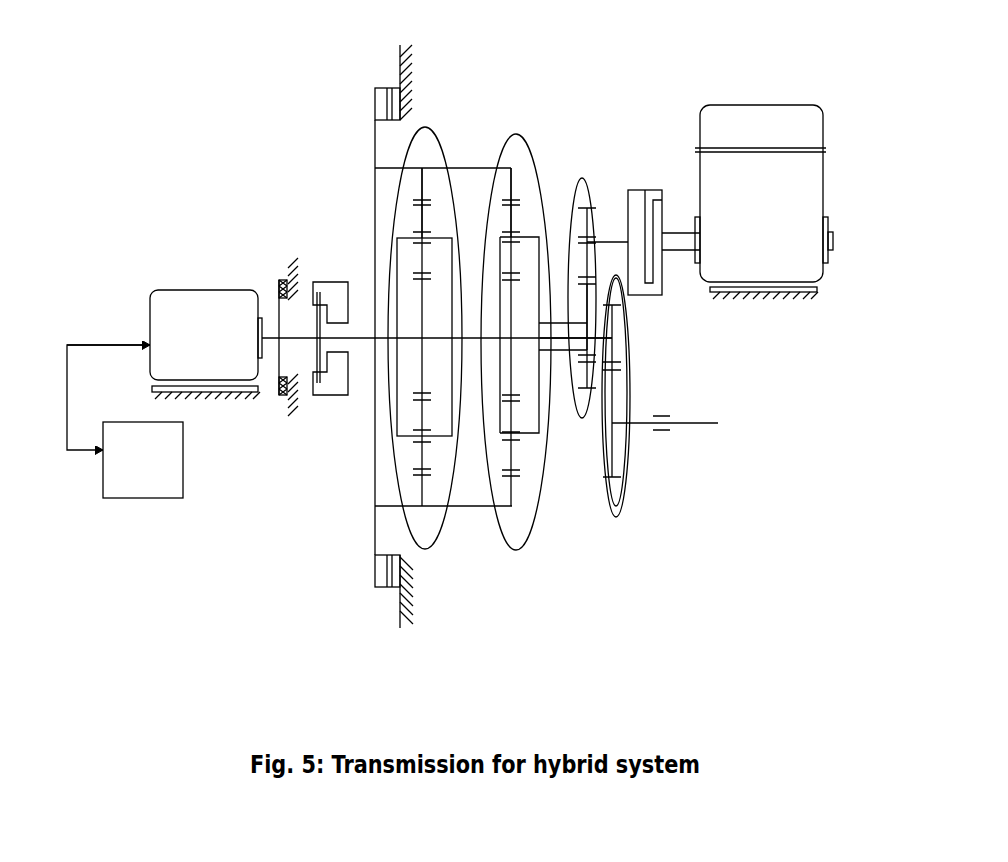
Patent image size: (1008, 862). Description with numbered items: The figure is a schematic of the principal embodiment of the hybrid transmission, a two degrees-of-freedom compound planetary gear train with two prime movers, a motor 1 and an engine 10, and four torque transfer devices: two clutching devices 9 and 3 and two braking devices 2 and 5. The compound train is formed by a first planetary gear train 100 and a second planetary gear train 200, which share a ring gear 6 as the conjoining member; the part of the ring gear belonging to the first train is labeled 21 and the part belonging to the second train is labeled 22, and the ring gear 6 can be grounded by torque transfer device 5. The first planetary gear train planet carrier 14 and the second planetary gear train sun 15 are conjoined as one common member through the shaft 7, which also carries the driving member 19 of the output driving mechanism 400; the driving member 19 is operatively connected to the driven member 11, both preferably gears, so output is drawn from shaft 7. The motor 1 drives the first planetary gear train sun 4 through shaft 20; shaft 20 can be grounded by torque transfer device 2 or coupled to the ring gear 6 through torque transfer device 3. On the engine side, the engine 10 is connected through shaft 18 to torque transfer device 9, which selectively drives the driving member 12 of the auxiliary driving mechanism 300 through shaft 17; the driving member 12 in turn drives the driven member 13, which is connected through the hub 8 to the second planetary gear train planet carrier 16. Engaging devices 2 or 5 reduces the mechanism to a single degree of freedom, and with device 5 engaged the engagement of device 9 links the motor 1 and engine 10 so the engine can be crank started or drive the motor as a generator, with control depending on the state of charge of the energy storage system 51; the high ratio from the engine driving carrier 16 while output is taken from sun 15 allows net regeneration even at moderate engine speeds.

The motor 1 is at (196, 287).
The torque transfer device 2 is at (277, 273).
The torque transfer device 3 is at (318, 280).
The first planetary gear train sun 4 is at (417, 367).
The torque transfer device 5 is at (378, 83).
The ring gear 6 is at (465, 165).
The shaft 7 is at (590, 340).
The hub 8 is at (547, 313).
The torque transfer device 9 is at (667, 278).
The engine 10 is at (775, 103).
The driven member 11 is at (615, 445).
The driving member 12 is at (590, 232).
The driven member 13 is at (582, 303).
The first planetary gear train planet carrier 14 is at (450, 437).
The second planetary gear train sun 15 is at (521, 373).
The second planetary gear train planet carrier 16 is at (541, 369).
The shaft 17 is at (612, 238).
The shaft 18 is at (675, 227).
The driving member 19 is at (622, 300).
The shaft 20 is at (303, 342).
The ring gear part of first planetary gear train 21 is at (413, 182).
The ring gear part of second planetary gear train 22 is at (517, 183).
The energy storage system 51 is at (153, 500).
The first planetary gear train 100 is at (433, 553).
The second planetary gear train 200 is at (528, 548).
The auxiliary driving mechanism 300 is at (582, 175).
The output driving mechanism 400 is at (625, 500).